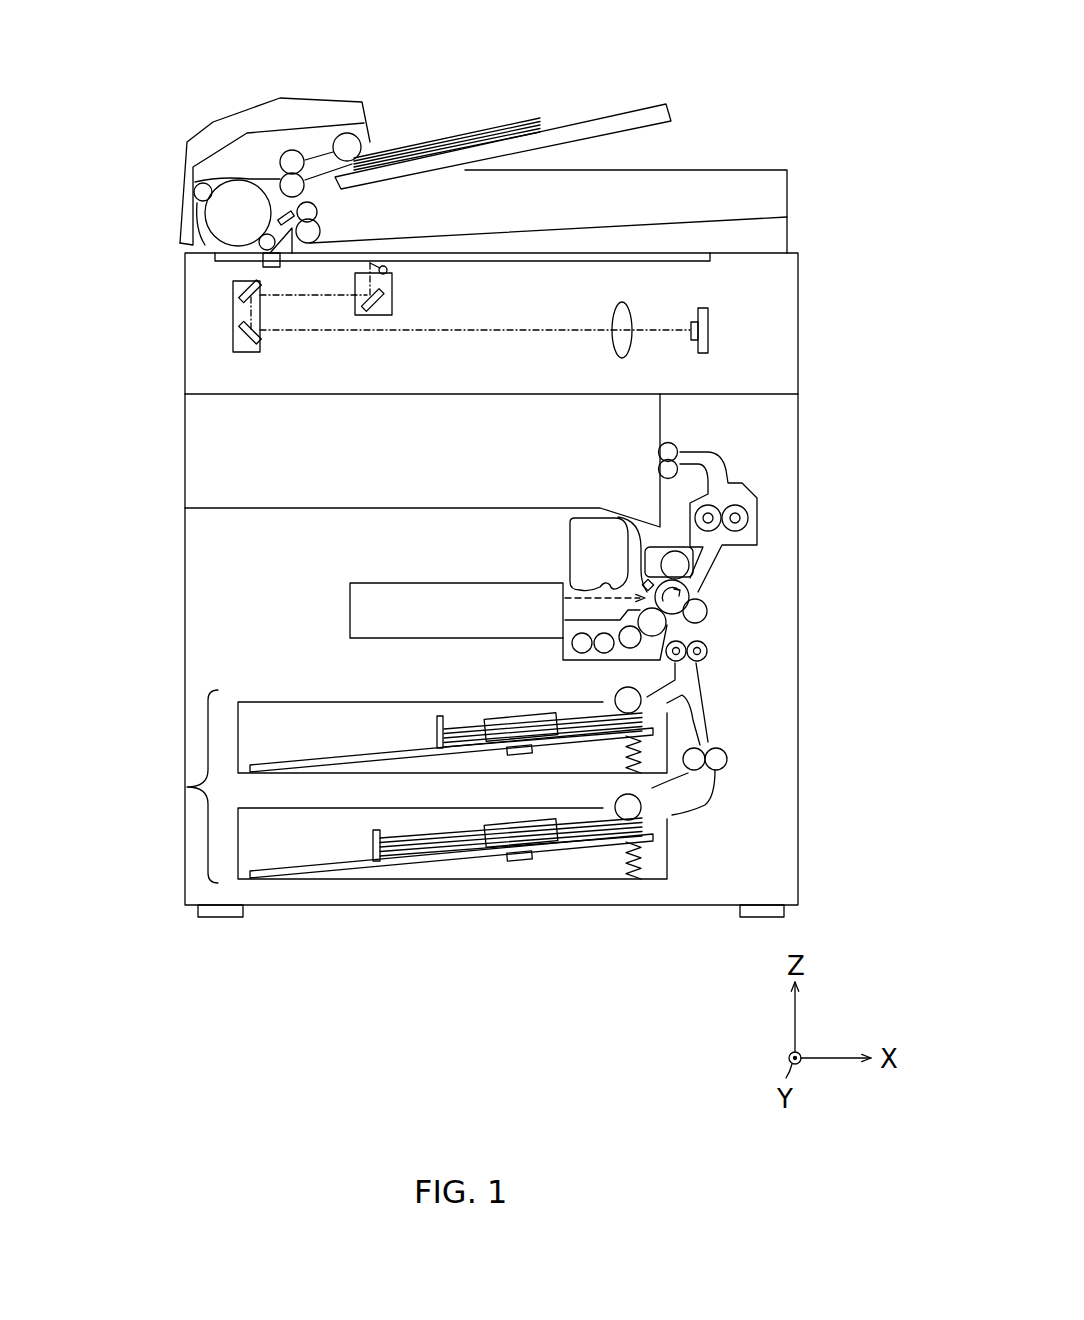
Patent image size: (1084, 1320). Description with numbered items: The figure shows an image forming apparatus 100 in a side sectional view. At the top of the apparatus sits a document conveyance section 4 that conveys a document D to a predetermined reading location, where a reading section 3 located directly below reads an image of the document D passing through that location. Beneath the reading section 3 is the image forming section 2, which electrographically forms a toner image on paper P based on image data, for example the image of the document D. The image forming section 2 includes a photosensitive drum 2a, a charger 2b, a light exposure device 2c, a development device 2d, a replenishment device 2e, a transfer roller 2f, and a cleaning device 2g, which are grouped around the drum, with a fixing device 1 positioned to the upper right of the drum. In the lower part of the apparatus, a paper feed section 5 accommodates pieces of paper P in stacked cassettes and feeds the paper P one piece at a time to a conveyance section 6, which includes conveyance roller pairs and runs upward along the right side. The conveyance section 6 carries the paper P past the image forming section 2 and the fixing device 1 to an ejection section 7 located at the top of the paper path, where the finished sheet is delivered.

The image forming apparatus 100 is at (752, 100).
The document conveyance section 4 is at (162, 176).
The document D is at (460, 133).
The reading section 3 is at (810, 327).
The ejection section 7 is at (656, 457).
The fixing device 1 is at (758, 537).
The image forming section 2 is at (728, 602).
The photosensitive drum 2a is at (680, 616).
The charger 2b is at (636, 519).
The light exposure device 2c is at (384, 590).
The development device 2d is at (563, 662).
The replenishment device 2e is at (580, 532).
The transfer roller 2f is at (706, 619).
The cleaning device 2g is at (686, 565).
The conveyance section 6 is at (713, 815).
The paper feed section 5 is at (186, 788).
The paper P is at (457, 728).